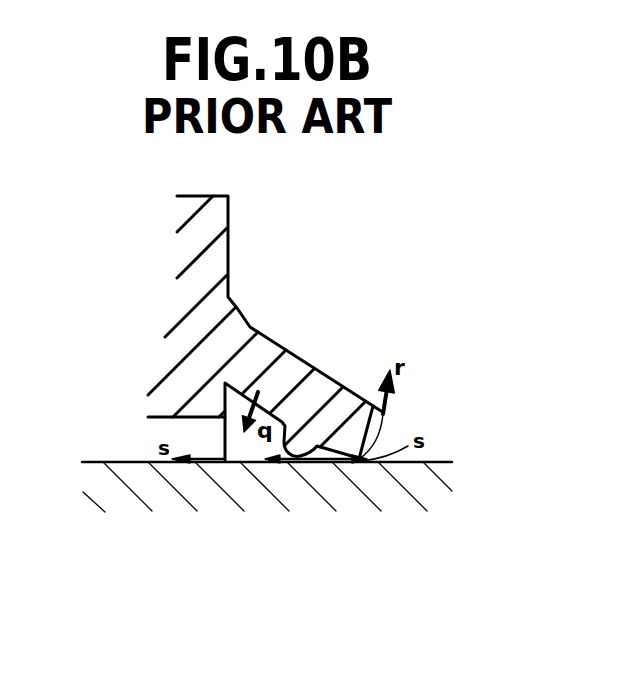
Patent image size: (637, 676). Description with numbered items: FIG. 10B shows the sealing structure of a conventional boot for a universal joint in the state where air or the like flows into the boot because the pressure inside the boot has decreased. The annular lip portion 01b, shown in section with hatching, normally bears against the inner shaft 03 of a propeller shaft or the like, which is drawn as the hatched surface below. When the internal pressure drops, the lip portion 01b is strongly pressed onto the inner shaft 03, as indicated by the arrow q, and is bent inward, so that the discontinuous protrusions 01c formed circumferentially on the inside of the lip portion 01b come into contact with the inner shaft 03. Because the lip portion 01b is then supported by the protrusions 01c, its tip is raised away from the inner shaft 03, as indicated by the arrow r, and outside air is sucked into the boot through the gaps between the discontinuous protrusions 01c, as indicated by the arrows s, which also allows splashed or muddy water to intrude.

The annular lip portion 01b is at (295, 368).
The discontinuous protrusions 01c is at (318, 437).
The inner shaft 03 is at (205, 495).